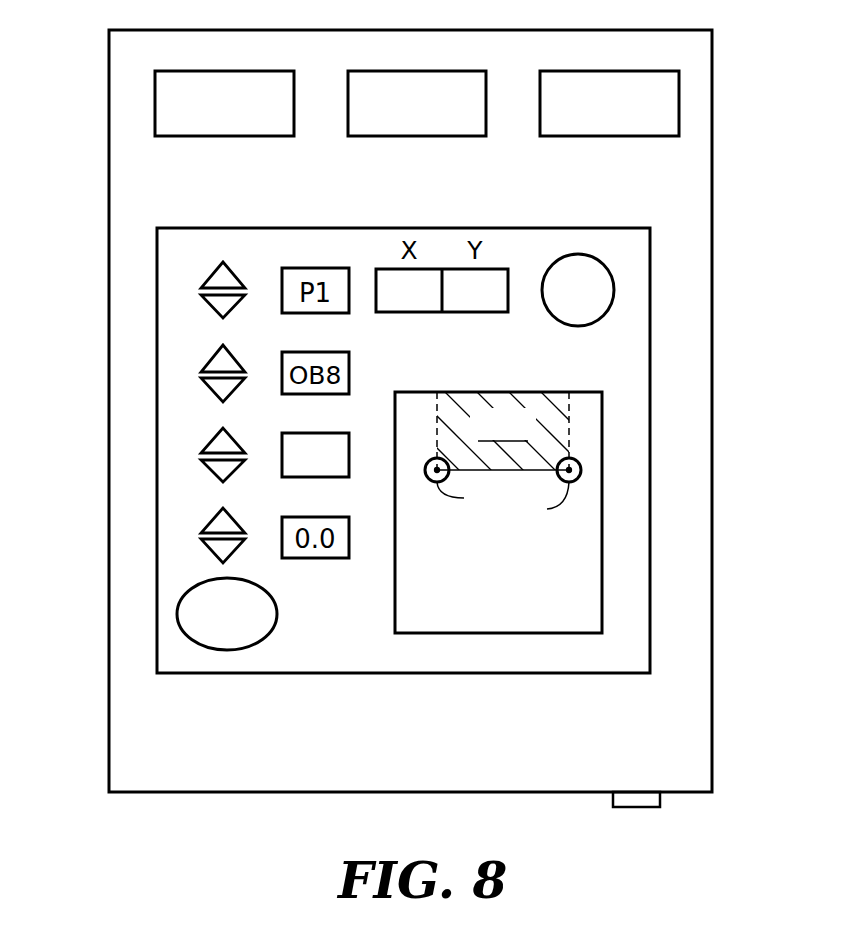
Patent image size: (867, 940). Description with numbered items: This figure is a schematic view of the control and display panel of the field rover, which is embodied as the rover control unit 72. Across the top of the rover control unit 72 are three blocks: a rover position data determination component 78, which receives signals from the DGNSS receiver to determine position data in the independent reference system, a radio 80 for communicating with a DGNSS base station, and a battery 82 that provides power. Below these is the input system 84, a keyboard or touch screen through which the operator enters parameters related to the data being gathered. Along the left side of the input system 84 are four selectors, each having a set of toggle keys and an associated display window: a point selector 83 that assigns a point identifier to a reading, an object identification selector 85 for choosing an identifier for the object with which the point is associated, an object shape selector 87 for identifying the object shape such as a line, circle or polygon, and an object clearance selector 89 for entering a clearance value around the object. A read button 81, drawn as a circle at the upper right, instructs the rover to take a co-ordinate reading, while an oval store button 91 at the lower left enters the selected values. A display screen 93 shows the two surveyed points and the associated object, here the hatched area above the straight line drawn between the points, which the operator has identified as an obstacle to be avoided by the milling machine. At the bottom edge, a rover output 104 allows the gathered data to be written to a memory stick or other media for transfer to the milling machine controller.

The rover control unit 72 is at (174, 821).
The rover position data determination component 78 is at (208, 117).
The radio 80 is at (401, 117).
The battery 82 is at (594, 117).
The read button 81 is at (614, 290).
The point selector 83 is at (223, 278).
The input system 84 is at (318, 673).
The object identification selector 85 is at (223, 362).
The object shape selector 87 is at (223, 445).
The object clearance selector 89 is at (223, 525).
The store button 91 is at (177, 614).
The display screen 93 is at (602, 552).
The rover output 104 is at (633, 807).